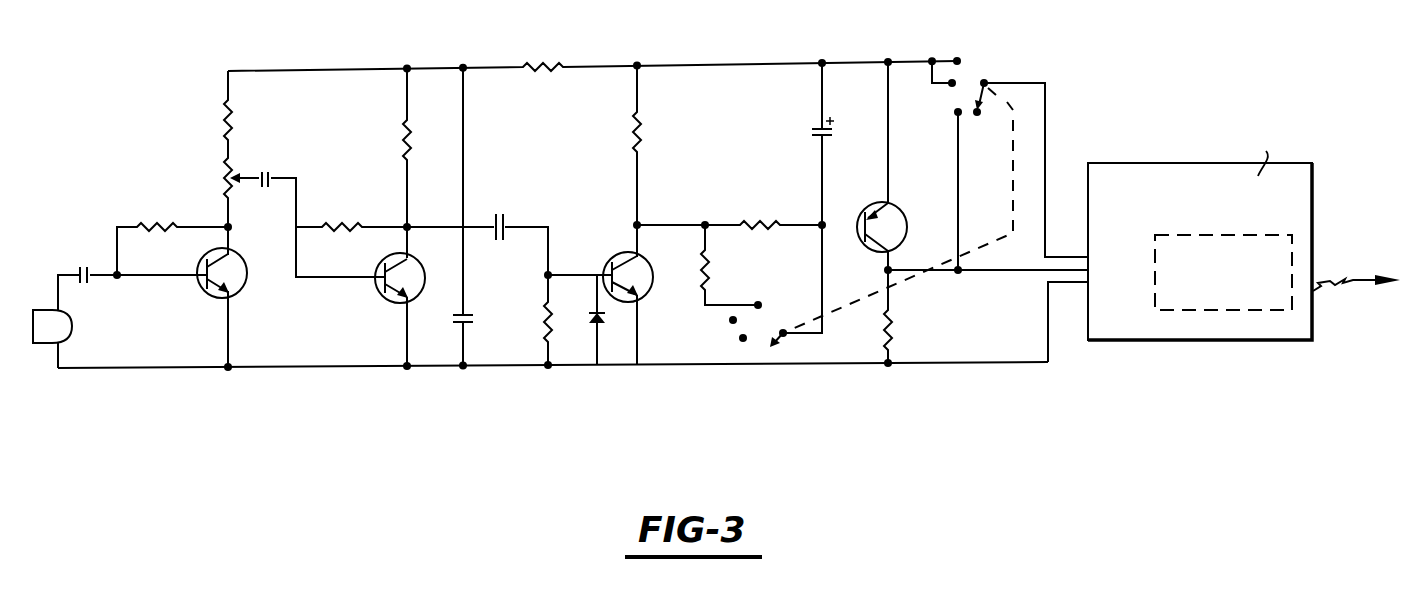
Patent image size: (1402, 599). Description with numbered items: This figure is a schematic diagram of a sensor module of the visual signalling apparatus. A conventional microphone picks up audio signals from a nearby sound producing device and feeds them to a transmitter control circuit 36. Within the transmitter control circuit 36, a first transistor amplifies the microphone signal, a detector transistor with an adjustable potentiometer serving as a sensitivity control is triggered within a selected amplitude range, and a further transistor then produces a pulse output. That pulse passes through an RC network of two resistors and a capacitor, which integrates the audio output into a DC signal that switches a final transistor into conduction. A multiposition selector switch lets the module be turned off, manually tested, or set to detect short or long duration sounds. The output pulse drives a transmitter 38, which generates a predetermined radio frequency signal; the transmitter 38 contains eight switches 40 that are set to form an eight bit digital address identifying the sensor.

The transmitter control circuit 36 is at (526, 390).
The transmitter 38 is at (1177, 331).
The eight switches 40 is at (1178, 210).